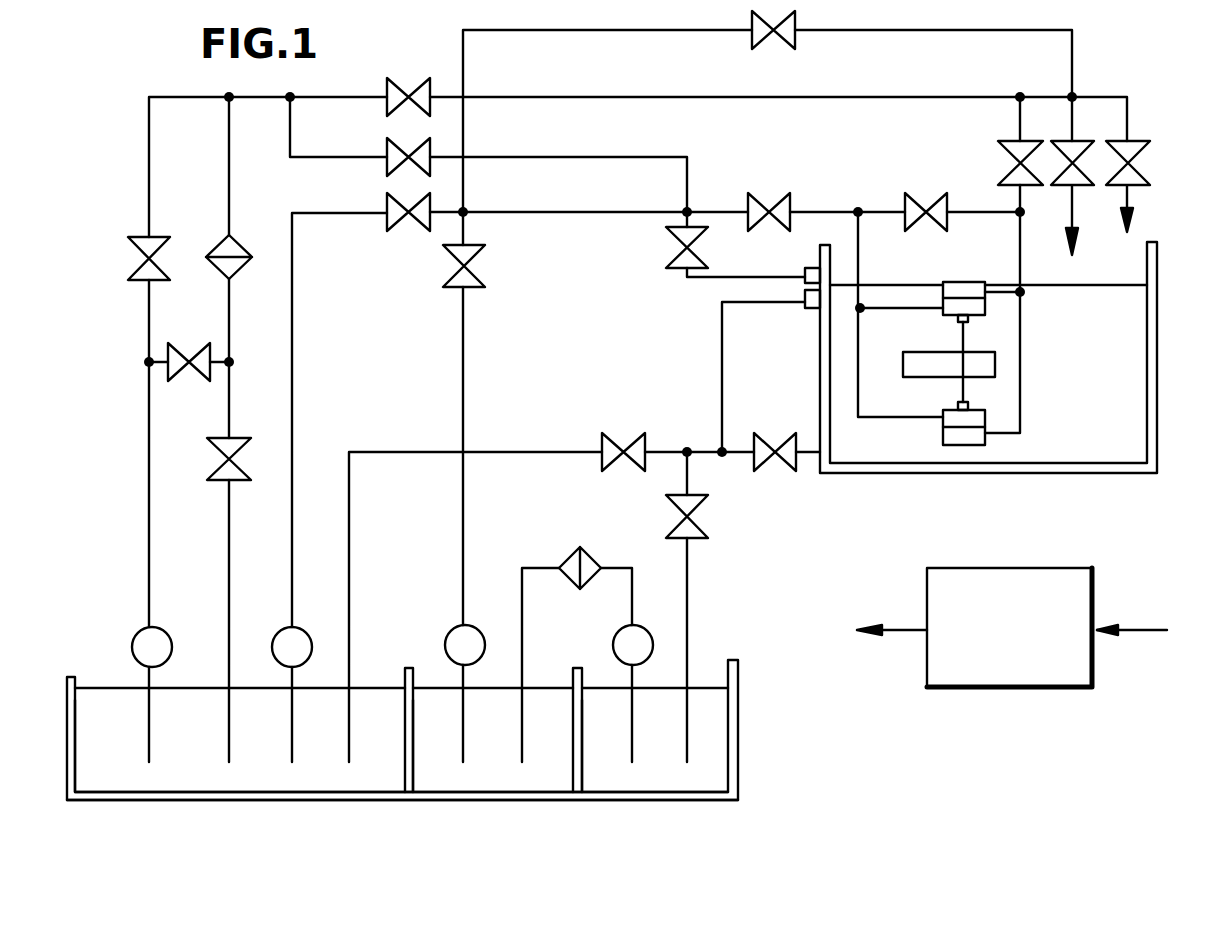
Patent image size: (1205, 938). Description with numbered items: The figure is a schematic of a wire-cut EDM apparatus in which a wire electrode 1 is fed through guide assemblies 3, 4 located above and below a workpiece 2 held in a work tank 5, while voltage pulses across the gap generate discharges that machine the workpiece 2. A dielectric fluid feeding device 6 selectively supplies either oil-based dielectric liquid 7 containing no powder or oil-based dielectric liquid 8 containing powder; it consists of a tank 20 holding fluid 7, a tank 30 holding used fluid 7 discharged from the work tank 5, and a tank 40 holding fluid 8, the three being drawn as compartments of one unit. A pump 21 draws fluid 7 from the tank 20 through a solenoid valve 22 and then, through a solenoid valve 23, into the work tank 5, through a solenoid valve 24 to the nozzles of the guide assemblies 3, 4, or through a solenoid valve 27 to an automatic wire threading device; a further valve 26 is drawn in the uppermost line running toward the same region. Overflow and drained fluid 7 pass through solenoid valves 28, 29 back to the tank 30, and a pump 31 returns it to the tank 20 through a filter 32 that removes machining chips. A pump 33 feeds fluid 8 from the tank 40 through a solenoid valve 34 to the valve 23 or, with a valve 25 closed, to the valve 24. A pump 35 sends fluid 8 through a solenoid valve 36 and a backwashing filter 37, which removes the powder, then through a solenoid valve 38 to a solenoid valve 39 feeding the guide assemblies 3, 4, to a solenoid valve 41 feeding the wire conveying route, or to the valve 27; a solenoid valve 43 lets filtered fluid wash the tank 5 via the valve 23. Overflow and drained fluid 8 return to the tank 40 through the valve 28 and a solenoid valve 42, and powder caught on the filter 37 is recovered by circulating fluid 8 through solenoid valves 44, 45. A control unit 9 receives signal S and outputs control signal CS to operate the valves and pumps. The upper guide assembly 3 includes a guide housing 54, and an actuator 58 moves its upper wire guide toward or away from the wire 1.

The wire electrode 1 is at (957, 335).
The workpiece 2 is at (985, 365).
The guide assembly 3 is at (965, 290).
The guide assembly 4 is at (950, 432).
The work tank 5 is at (1160, 255).
The dielectric fluid feeding device 6 is at (642, 868).
The dielectric liquid containing no powder 7 is at (440, 765).
The dielectric liquid containing powder 8 is at (95, 778).
The control unit 9 is at (1022, 578).
The tank 20 is at (493, 800).
The pump 21 is at (448, 634).
The solenoid valve 22 is at (482, 290).
The solenoid valve 23 is at (668, 265).
The solenoid valve 24 is at (765, 195).
The valve 25 is at (920, 195).
The valve 26 is at (795, 35).
The solenoid valve 27 is at (1068, 160).
The solenoid valve 28 is at (762, 462).
The solenoid valve 29 is at (700, 535).
The tank 30 is at (690, 800).
The pump 31 is at (617, 640).
The filter 32 is at (575, 556).
The pump 33 is at (276, 640).
The solenoid valve 34 is at (390, 222).
The pump 35 is at (135, 640).
The solenoid valve 36 is at (170, 355).
The backwashing filter 37 is at (225, 245).
The solenoid valve 38 is at (385, 100).
The solenoid valve 39 is at (1005, 155).
The tank 40 is at (178, 800).
The solenoid valve 41 is at (1132, 150).
The solenoid valve 42 is at (606, 450).
The solenoid valve 43 is at (385, 165).
The solenoid valve 44 is at (140, 240).
The solenoid valve 45 is at (238, 440).
The guide housing 54 is at (805, 270).
The actuator 58 is at (805, 305).